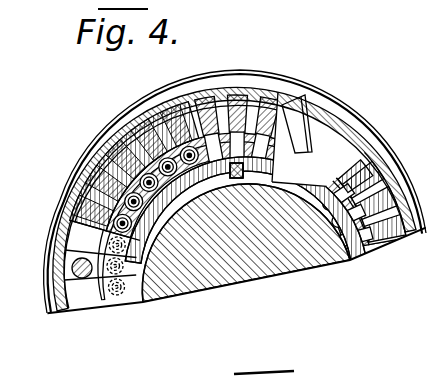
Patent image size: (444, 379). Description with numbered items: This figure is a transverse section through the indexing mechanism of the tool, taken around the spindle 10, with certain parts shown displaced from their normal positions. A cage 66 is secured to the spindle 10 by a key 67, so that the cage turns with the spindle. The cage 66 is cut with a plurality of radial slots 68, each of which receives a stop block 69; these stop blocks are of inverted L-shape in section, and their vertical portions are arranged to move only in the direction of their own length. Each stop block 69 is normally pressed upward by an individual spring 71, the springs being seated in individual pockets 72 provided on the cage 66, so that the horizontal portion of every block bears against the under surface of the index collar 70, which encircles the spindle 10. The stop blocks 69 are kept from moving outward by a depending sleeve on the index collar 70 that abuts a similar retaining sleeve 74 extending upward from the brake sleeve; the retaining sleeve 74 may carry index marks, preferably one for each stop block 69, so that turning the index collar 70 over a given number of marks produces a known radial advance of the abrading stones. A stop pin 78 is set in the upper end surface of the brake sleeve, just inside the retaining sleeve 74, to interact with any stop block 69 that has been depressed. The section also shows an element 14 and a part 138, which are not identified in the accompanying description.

The spindle 10 is at (290, 272).
The shaft 14 is at (443, 150).
The cage 66 is at (133, 293).
The key 67 is at (250, 177).
The radial slots 68 is at (68, 210).
The stop blocks 69 is at (173, 107).
The index collar 70 is at (138, 101).
The individual springs 71 is at (142, 177).
The individual pockets 72 is at (126, 196).
The retaining sleeve 74 is at (350, 128).
The stop pin 78 is at (84, 279).
The slotted core section 138 is at (442, 285).